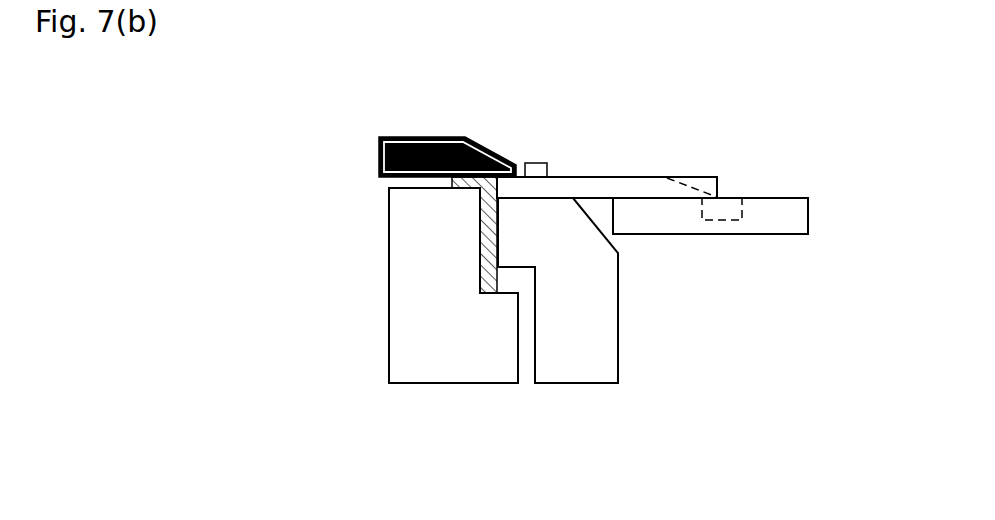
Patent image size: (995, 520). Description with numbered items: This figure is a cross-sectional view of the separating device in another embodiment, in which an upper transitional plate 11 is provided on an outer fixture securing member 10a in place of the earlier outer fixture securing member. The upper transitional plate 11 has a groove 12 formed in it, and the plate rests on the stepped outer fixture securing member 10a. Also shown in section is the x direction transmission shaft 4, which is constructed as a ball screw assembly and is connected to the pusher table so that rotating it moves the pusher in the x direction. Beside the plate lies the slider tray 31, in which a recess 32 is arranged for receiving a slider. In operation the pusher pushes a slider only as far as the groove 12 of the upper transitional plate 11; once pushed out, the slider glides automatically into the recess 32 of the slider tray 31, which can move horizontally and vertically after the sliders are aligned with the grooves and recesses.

The x direction transmission shaft 4 is at (538, 160).
The outer fixture securing member 10a is at (592, 383).
The upper transitional plate 11 is at (602, 188).
The groove 12 is at (690, 180).
The slider tray 31 is at (638, 210).
The recess 32 is at (720, 207).